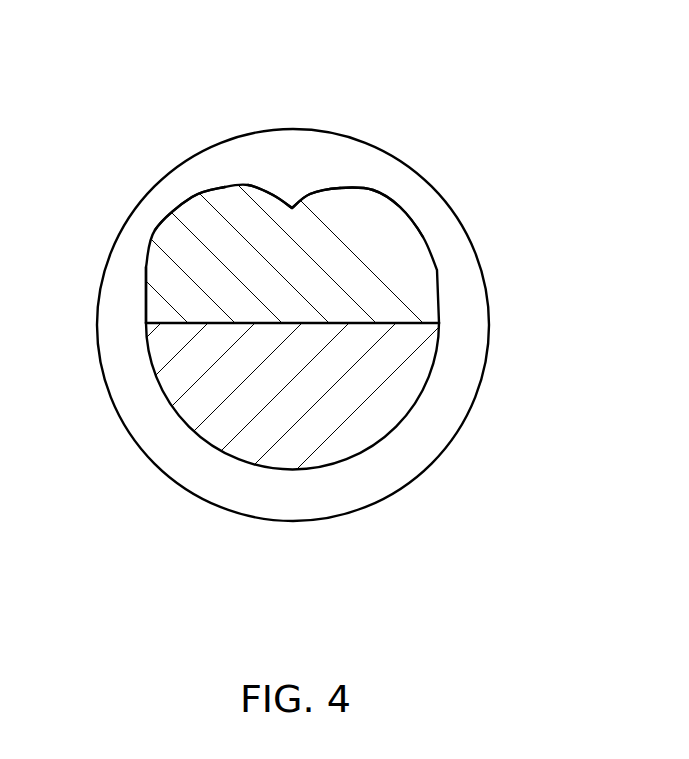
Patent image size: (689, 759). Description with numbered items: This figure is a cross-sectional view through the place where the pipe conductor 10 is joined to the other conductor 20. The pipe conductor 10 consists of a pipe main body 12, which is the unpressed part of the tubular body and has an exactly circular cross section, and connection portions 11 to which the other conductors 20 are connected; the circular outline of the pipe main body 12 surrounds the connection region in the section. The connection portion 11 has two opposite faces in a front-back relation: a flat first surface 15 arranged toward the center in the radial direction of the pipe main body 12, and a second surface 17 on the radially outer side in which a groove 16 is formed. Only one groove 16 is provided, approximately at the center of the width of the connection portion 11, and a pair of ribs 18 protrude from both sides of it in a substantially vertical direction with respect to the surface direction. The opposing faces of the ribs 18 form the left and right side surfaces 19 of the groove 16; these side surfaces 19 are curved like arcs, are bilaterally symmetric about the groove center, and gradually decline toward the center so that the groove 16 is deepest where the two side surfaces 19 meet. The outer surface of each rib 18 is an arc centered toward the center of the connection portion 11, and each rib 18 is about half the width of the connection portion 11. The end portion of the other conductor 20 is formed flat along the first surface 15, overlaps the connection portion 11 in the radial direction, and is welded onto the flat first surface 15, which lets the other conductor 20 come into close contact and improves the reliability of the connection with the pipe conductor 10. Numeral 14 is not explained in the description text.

The pipe conductor 10 is at (301, 387).
The connection portion 11 is at (410, 258).
The pipe main body 12 is at (415, 455).
The side face 14 is at (173, 277).
The first surface 15 is at (395, 323).
The groove 16 is at (291, 206).
The second surface 17 is at (352, 185).
The rib 18 is at (198, 207).
The side surface of the groove 19 is at (267, 190).
The other conductor 20 is at (276, 450).